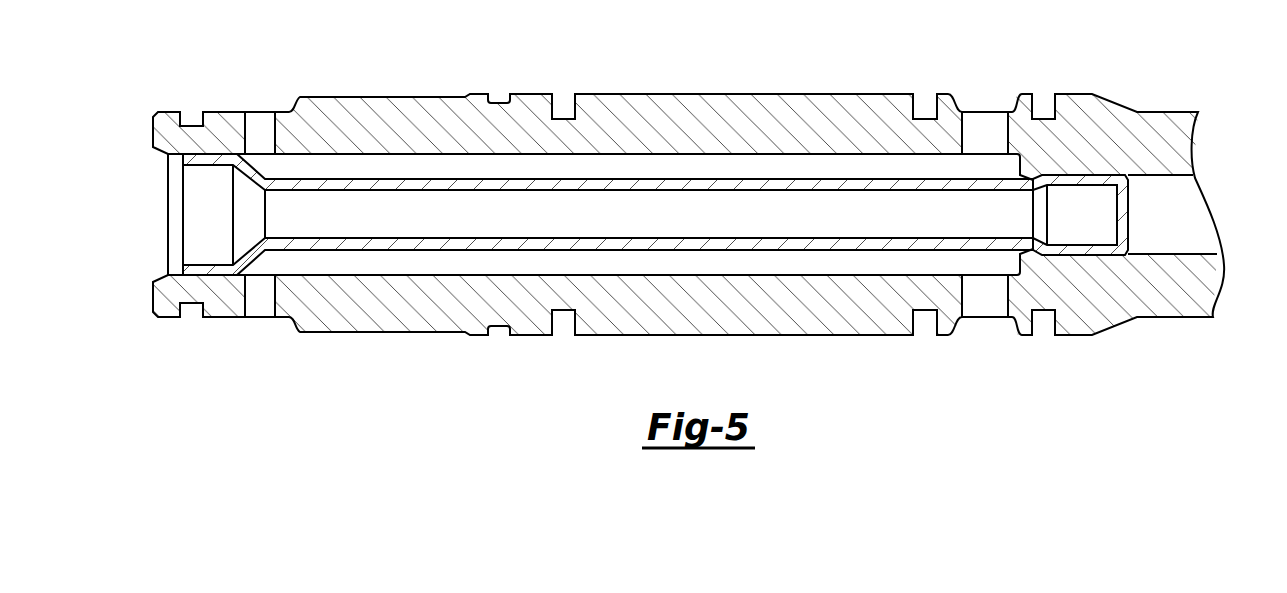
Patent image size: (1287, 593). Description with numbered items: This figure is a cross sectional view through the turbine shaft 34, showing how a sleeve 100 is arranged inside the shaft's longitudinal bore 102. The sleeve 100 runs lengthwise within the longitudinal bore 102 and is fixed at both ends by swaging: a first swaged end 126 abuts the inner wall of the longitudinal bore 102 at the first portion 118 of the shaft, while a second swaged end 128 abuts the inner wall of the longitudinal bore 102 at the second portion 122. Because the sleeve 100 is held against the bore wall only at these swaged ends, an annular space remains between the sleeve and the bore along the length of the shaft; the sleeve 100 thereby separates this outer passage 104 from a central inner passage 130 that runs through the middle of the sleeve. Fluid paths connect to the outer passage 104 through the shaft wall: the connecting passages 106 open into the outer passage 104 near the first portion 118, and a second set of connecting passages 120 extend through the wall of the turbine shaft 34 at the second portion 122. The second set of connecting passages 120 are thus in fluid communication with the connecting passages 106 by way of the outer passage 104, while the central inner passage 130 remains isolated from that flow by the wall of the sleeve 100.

The turbine shaft 34 is at (1070, 62).
The sleeve 100 is at (423, 188).
The longitudinal bore 102 is at (159, 281).
The outer passage 104 is at (827, 163).
The connecting passages 106 is at (276, 122).
The first portion 118 is at (220, 128).
The second set of connecting passages 120 is at (960, 118).
The second portion 122 is at (1081, 100).
The first swaged end 126 is at (210, 162).
The second swaged end 128 is at (1092, 182).
The central inner passage 130 is at (632, 210).